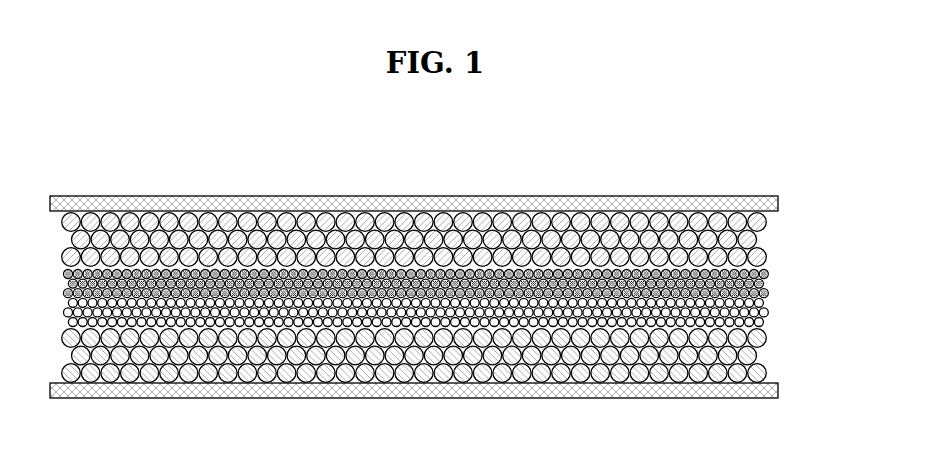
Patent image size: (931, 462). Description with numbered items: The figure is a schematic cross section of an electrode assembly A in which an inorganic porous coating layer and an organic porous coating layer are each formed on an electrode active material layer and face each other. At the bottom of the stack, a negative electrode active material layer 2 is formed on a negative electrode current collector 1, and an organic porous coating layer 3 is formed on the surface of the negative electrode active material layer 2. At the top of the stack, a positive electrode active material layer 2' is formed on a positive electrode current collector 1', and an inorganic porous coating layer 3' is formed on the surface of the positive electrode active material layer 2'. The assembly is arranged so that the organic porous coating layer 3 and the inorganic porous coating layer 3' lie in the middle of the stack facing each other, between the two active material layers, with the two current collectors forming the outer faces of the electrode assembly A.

The electrode assembly A is at (680, 170).
The negative electrode current collector 1 is at (433, 393).
The positive electrode current collector 1' is at (435, 205).
The negative electrode active material layer 2 is at (439, 356).
The positive electrode active material layer 2' is at (442, 240).
The organic porous coating layer 3 is at (440, 312).
The inorganic porous coating layer 3' is at (443, 284).